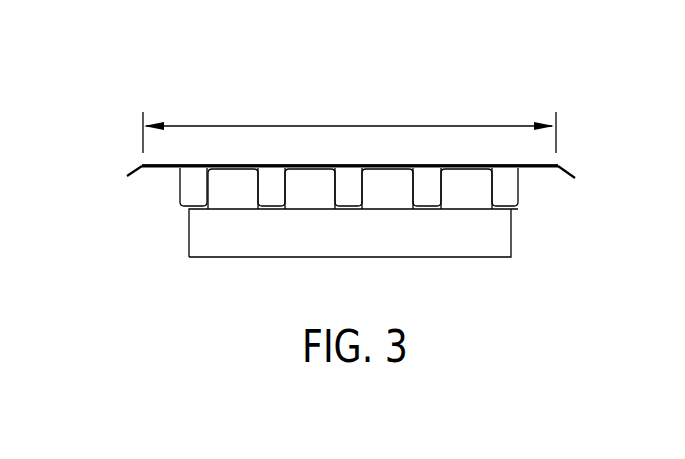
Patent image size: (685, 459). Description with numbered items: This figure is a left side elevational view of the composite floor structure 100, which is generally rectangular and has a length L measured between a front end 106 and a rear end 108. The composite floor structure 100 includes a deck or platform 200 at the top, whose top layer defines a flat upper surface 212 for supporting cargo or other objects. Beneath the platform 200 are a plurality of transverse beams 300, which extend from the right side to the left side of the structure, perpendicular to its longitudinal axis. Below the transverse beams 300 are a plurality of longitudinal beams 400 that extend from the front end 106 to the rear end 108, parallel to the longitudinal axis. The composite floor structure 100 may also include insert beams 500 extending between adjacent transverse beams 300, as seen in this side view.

The composite floor structure 100 is at (598, 114).
The front end 106 is at (127, 176).
The rear end 108 is at (575, 178).
The platform 200 is at (395, 165).
The flat upper surface 212 is at (510, 163).
The transverse beams 300 is at (275, 183).
The longitudinal beams 400 is at (207, 247).
The insert beams 500 is at (226, 184).